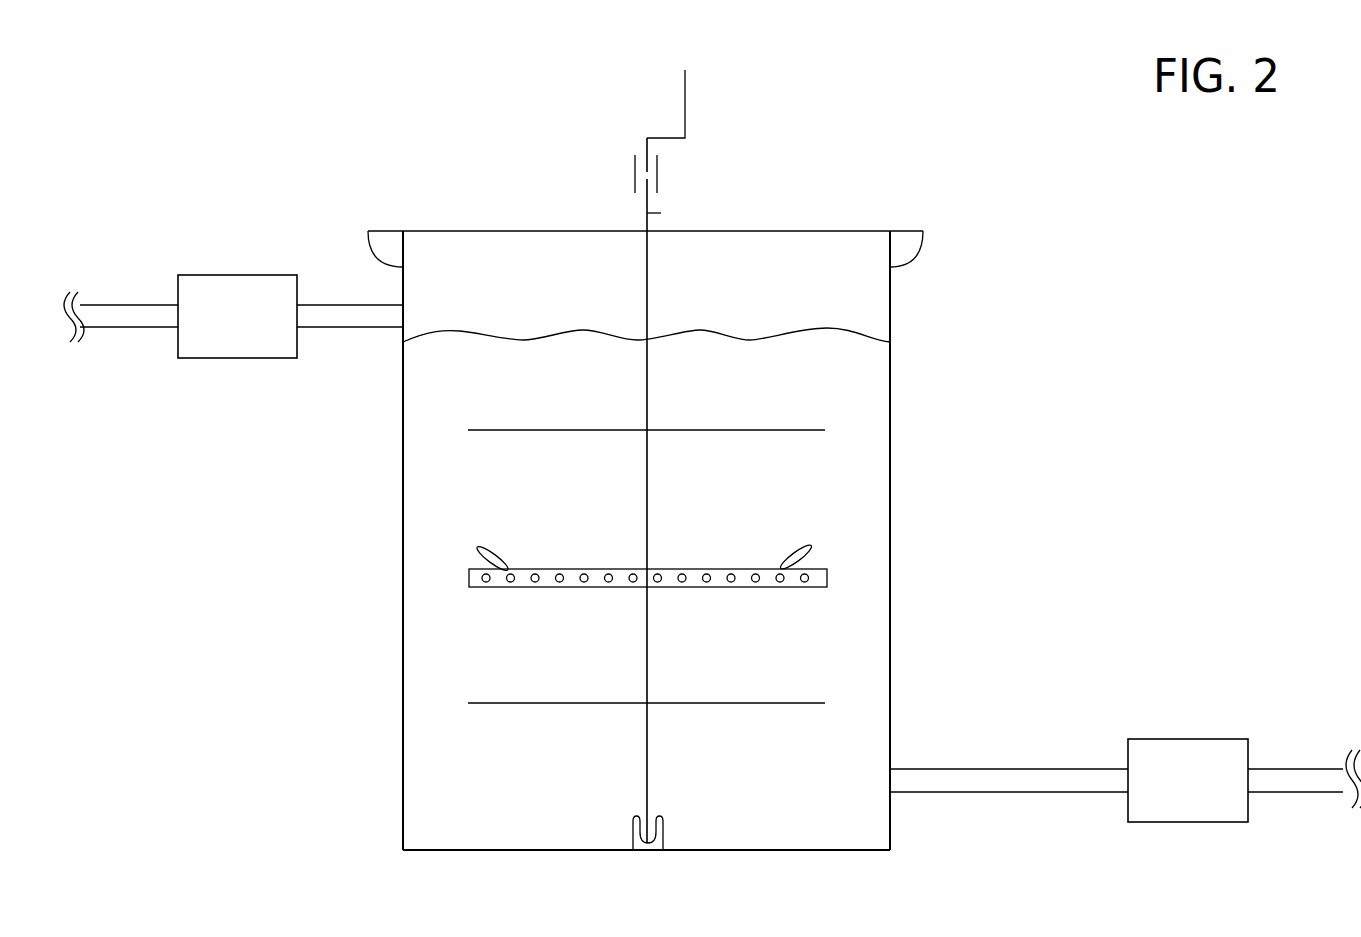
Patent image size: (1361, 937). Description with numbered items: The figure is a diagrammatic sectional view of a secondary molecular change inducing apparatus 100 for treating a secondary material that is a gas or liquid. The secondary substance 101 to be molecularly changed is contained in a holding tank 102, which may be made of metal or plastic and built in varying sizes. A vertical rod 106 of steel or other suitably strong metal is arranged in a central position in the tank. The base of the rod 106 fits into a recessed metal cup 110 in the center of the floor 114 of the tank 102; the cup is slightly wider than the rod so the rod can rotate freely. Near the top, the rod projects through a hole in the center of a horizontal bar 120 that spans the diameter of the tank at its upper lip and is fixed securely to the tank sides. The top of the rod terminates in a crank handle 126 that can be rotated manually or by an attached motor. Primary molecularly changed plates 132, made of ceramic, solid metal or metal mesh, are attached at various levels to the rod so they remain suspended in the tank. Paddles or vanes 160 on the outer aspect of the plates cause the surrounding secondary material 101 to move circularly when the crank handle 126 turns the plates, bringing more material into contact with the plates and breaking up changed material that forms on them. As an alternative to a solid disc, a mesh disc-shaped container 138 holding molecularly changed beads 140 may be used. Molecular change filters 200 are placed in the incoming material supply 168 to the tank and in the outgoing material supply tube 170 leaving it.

The secondary molecular change inducing apparatus 100 is at (960, 290).
The secondary substance 101 is at (568, 662).
The holding tank 102 is at (890, 437).
The vertical rod 106 is at (647, 480).
The recessed metal cup 110 is at (667, 840).
The floor 114 is at (824, 850).
The horizontal bar 120 is at (812, 231).
The crank handle 126 is at (685, 82).
The primary molecularly changed plates 132 is at (787, 430).
The mesh disc-shaped containers 138 is at (498, 587).
The molecularly changed beads 140 is at (537, 569).
The paddles or vanes 160 is at (812, 545).
The incoming material supply 168 is at (343, 327).
The outgoing material supply tube 170 is at (1048, 769).
The molecular change filters 200 is at (240, 275).